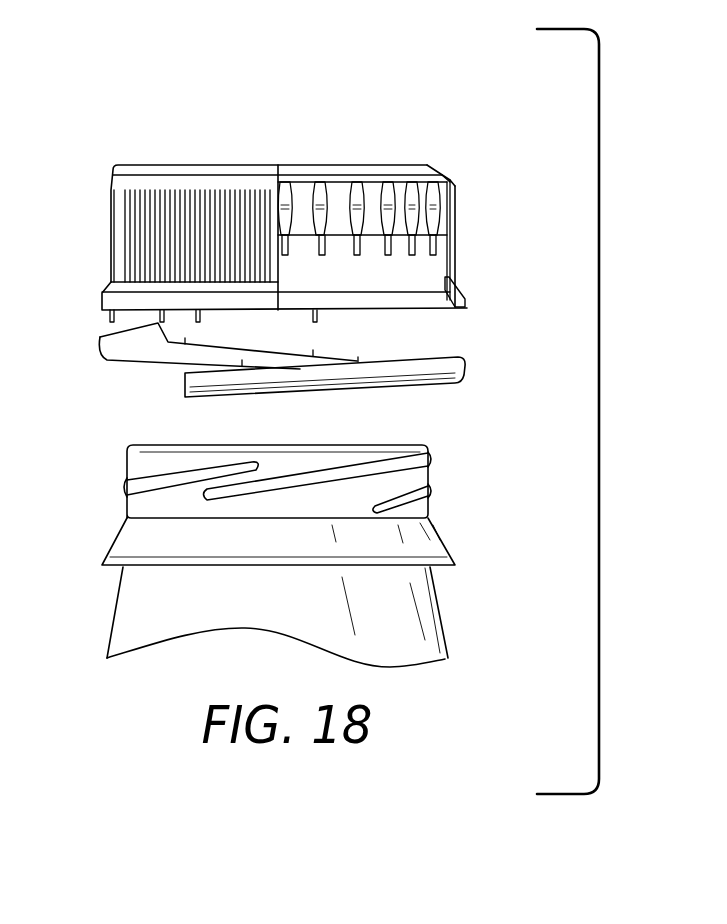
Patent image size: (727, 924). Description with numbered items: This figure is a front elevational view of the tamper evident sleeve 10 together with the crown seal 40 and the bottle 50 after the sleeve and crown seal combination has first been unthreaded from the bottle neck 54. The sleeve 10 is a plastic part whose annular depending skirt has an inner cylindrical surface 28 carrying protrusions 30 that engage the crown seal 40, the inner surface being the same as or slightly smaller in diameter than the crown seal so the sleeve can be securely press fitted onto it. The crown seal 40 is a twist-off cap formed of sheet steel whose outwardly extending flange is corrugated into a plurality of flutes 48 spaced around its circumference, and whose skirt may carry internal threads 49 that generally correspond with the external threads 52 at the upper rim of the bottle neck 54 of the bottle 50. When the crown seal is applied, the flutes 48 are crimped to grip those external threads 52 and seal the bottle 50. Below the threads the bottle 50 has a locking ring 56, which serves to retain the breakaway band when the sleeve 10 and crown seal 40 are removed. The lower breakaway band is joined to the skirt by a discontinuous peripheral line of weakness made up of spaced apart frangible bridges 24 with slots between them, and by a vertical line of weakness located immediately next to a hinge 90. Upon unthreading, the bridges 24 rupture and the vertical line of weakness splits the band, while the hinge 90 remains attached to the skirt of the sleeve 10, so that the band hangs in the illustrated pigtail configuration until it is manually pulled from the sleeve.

The tamper evident sleeve 10 is at (248, 155).
The frangible bridges 24 is at (458, 353).
The inner cylindrical surface 28 is at (444, 311).
The protrusions 30 is at (445, 252).
The crown seal 40 is at (372, 182).
The flutes 48 is at (318, 226).
The internal threads 49 is at (453, 193).
The bottle 50 is at (448, 587).
The external threads 52 is at (430, 460).
The bottle neck 54 is at (127, 510).
The locking ring 56 is at (116, 546).
The hinge 90 is at (165, 320).